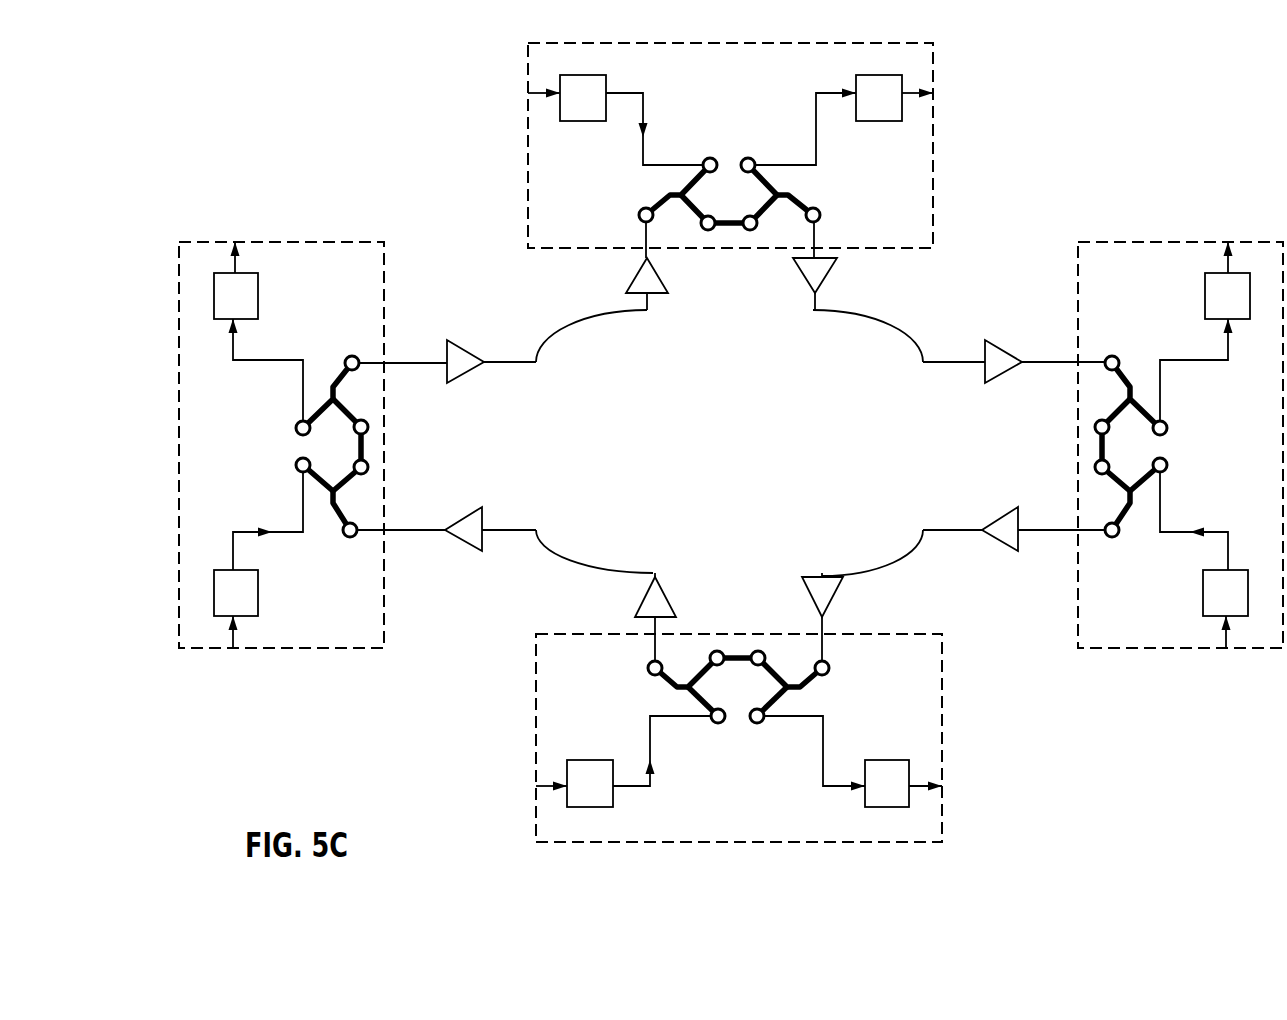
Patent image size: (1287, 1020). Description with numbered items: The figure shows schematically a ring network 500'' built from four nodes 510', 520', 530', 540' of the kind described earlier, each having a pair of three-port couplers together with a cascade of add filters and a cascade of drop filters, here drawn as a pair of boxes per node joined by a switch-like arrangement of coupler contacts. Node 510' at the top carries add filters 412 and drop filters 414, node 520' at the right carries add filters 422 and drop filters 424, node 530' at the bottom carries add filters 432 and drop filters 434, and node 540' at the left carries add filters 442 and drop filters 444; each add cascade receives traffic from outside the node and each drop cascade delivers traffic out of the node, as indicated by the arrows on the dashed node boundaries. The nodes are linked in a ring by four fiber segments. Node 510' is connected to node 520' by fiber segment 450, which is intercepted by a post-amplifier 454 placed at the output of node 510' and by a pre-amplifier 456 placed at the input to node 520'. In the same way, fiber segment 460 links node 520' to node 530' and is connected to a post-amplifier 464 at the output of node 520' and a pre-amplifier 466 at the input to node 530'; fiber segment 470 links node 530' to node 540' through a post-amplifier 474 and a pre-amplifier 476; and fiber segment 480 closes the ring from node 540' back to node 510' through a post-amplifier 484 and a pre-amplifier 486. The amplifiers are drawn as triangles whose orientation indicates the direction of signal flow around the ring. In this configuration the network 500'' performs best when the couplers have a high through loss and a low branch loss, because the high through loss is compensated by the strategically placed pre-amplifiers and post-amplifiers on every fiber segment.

The network 500'' is at (1207, 92).
The node 510' is at (730, 150).
The node 520' is at (1150, 445).
The node 530' is at (739, 729).
The node 540' is at (313, 445).
The add filters 412 is at (601, 112).
The drop filters 414 is at (897, 112).
The add filters 422 is at (1246, 310).
The drop filters 424 is at (1244, 607).
The add filters 432 is at (905, 798).
The drop filters 434 is at (608, 798).
The add filters 442 is at (254, 607).
The drop filters 444 is at (254, 310).
The fiber segment 450 is at (860, 315).
The post-amplifier 454 is at (802, 280).
The pre-amplifier 456 is at (985, 370).
The fiber segment 460 is at (863, 563).
The post-amplifier 464 is at (990, 520).
The pre-amplifier 466 is at (807, 603).
The fiber segment 470 is at (613, 545).
The post-amplifier 474 is at (697, 588).
The pre-amplifier 476 is at (452, 525).
The fiber segment 480 is at (590, 317).
The post-amplifier 484 is at (448, 372).
The pre-amplifier 486 is at (690, 268).